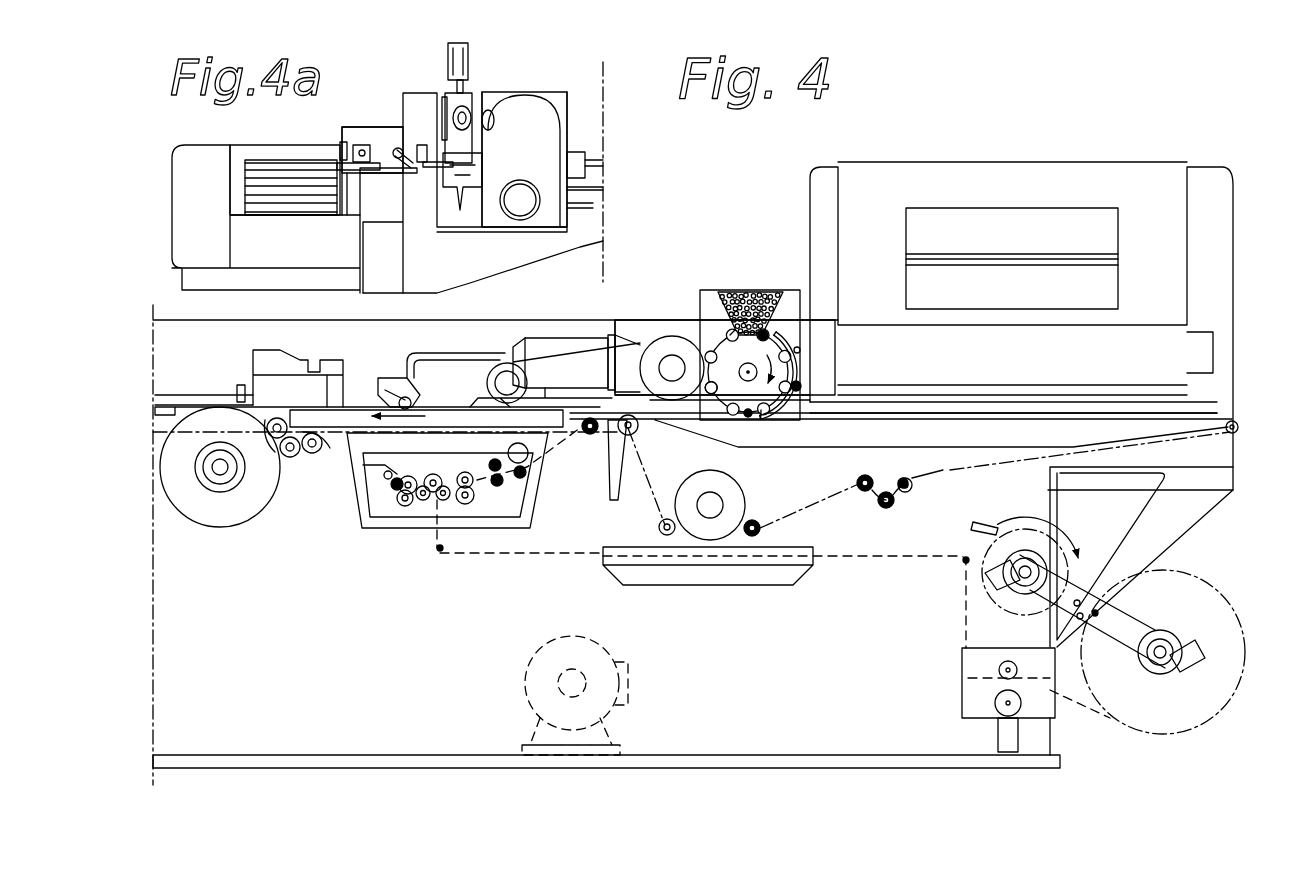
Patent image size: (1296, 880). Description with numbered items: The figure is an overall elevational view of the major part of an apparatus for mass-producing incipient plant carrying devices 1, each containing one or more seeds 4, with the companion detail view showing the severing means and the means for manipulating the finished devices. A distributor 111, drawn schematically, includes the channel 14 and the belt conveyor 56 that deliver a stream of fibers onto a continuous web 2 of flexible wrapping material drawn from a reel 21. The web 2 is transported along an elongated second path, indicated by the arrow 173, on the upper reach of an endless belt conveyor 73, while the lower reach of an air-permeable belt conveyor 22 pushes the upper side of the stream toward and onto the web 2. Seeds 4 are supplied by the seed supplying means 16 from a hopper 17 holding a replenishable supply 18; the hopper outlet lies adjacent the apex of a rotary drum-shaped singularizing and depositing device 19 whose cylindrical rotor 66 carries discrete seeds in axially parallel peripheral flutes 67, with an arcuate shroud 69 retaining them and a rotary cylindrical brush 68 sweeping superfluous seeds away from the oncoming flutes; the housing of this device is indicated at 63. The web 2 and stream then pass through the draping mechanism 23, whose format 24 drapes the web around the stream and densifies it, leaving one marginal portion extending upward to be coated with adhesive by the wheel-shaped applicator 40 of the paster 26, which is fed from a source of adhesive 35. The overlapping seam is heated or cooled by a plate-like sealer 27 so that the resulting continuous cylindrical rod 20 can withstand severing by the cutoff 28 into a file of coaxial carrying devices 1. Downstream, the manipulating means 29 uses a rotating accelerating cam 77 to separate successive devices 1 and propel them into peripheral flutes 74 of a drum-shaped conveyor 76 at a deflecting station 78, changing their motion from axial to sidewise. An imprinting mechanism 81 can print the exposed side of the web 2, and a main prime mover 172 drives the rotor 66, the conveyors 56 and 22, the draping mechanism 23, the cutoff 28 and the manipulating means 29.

In FIG. 4a, the incipient plant carrying device 1 is at (347, 140).
In FIG. 4, the web of flexible wrapping material 2 is at (572, 448).
In FIG. 4, the seeds 4 is at (752, 418).
In FIG. 4, the channel 14 is at (848, 449).
In FIG. 4, the seed supplying means 16 is at (748, 256).
In FIG. 4, the hopper 17 is at (722, 301).
In FIG. 4, the supply of seeds 18 is at (753, 296).
In FIG. 4, the seed singularizing and depositing device 19 is at (798, 386).
In FIG. 4, the continuous cylindrical rod 20 is at (163, 440).
In FIG. 4, the reel 21 is at (1213, 570).
In FIG. 4, the belt conveyor 22 is at (613, 318).
In FIG. 4, the draping mechanism 23 is at (640, 296).
In FIG. 4, the format 24 is at (462, 392).
In FIG. 4, the paster 26 is at (405, 362).
In FIG. 4, the sealer 27 is at (250, 372).
In FIG. 4a, the cutoff 28 is at (520, 95).
In FIG. 4a, the manipulating means 29 is at (293, 133).
In FIG. 4, the source of adhesive 35 is at (556, 350).
In FIG. 4, the applicator wheel 40 is at (414, 388).
In FIG. 4, the belt conveyor 56 is at (643, 482).
In FIG. 4, the metering wheel housing 63 is at (800, 350).
In FIG. 4, the rotor 66 is at (752, 363).
In FIG. 4, the flutes 67 is at (726, 350).
In FIG. 4, the rotary cylindrical brush 68 is at (770, 330).
In FIG. 4, the arcuate shroud 69 is at (786, 360).
In FIG. 4, the endless belt conveyor 73 is at (320, 452).
In FIG. 4a, the peripheral flutes 74 is at (312, 200).
In FIG. 4a, the drum-shaped conveyor 76 is at (278, 220).
In FIG. 4a, the accelerating cam 77 is at (363, 145).
In FIG. 4a, the deflecting station 78 is at (233, 160).
In FIG. 4, the imprinting mechanism 81 is at (392, 538).
In FIG. 4, the distributor 111 is at (1002, 148).
In FIG. 4, the main prime mover 172 is at (525, 678).
In FIG. 4, the second path arrow 173 is at (395, 413).